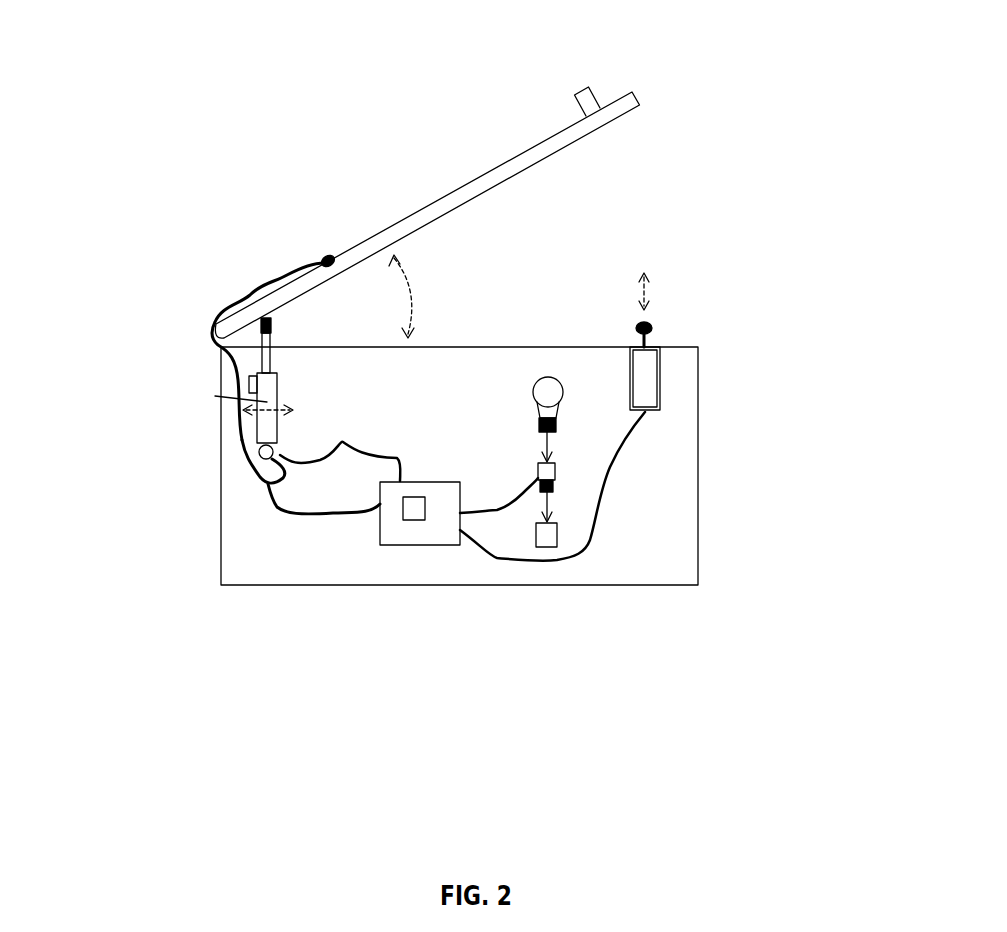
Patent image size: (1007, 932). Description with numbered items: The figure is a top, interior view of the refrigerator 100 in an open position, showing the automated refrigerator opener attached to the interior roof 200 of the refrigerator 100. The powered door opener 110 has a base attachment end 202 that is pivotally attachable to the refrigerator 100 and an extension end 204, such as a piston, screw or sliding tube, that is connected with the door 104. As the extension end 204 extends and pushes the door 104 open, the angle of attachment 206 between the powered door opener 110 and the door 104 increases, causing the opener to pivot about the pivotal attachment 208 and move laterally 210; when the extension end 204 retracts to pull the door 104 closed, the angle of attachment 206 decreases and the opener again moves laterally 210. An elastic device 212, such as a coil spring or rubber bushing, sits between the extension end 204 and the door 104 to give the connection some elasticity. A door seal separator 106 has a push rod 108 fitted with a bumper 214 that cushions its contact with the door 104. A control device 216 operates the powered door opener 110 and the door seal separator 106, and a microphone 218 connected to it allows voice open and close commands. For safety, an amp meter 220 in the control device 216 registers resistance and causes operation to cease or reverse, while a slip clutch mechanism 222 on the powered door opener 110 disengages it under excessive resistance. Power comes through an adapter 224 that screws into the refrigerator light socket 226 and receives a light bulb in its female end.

The refrigerator 100 is at (698, 490).
The door 104 is at (448, 186).
The door seal separator 106 is at (647, 388).
The push rod 108 is at (636, 342).
The powered door opener 110 is at (215, 396).
The interior roof 200 is at (436, 376).
The base attachment end 202 is at (242, 470).
The extension end 204 is at (270, 357).
The angle of attachment 206 is at (410, 289).
The pivotal attachment 208 is at (267, 483).
The lateral movement 210 is at (286, 398).
The elastic device 212 is at (272, 322).
The bumper 214 is at (654, 328).
The control device 216 is at (394, 544).
The microphone 218 is at (333, 256).
The amp meter 220 is at (414, 512).
The slip clutch mechanism 222 is at (236, 378).
The adapter 224 is at (537, 467).
The refrigerator light socket 226 is at (547, 533).